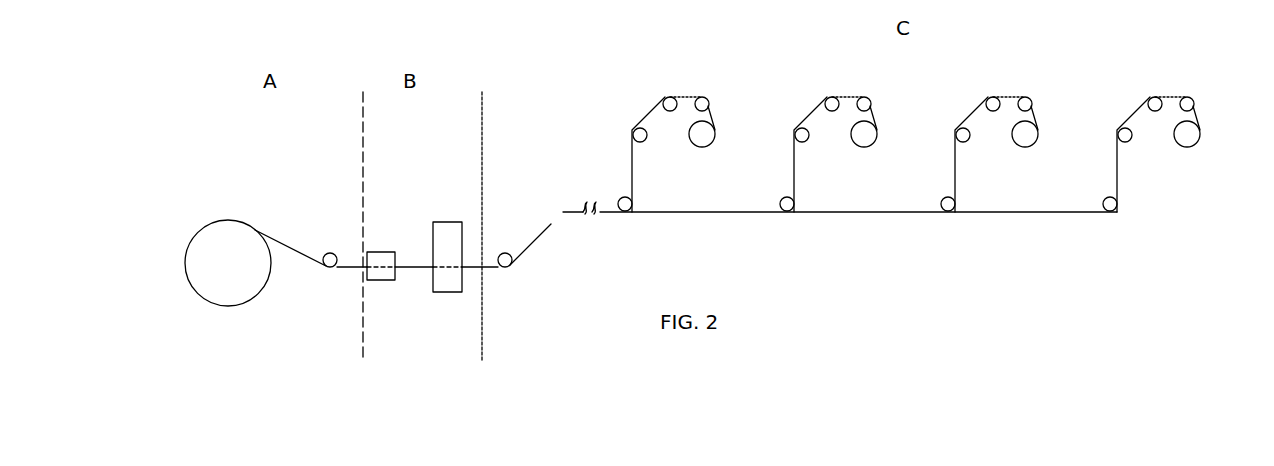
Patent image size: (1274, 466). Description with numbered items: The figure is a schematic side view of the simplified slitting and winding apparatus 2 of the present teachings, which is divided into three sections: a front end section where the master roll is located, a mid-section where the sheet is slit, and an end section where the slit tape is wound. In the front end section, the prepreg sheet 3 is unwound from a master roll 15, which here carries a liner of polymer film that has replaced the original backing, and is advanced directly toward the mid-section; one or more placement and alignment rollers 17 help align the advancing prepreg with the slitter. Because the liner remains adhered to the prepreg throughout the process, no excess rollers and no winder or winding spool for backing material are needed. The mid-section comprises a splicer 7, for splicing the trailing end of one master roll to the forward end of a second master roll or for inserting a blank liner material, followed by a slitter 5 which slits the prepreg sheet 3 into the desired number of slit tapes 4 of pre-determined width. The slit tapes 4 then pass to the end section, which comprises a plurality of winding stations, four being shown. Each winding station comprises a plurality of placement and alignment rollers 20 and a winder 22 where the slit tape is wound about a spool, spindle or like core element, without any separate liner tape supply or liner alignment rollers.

The slitting and winding apparatus 2 is at (280, 138).
The prepreg sheet 3 is at (288, 242).
The slit tapes 4 is at (530, 240).
The slitter 5 is at (462, 286).
The splicer 7 is at (383, 277).
The master roll 15 is at (236, 295).
The placement and alignment rollers 17 is at (330, 253).
The placement and alignment rollers 20 is at (633, 129).
The winder 22 is at (706, 140).